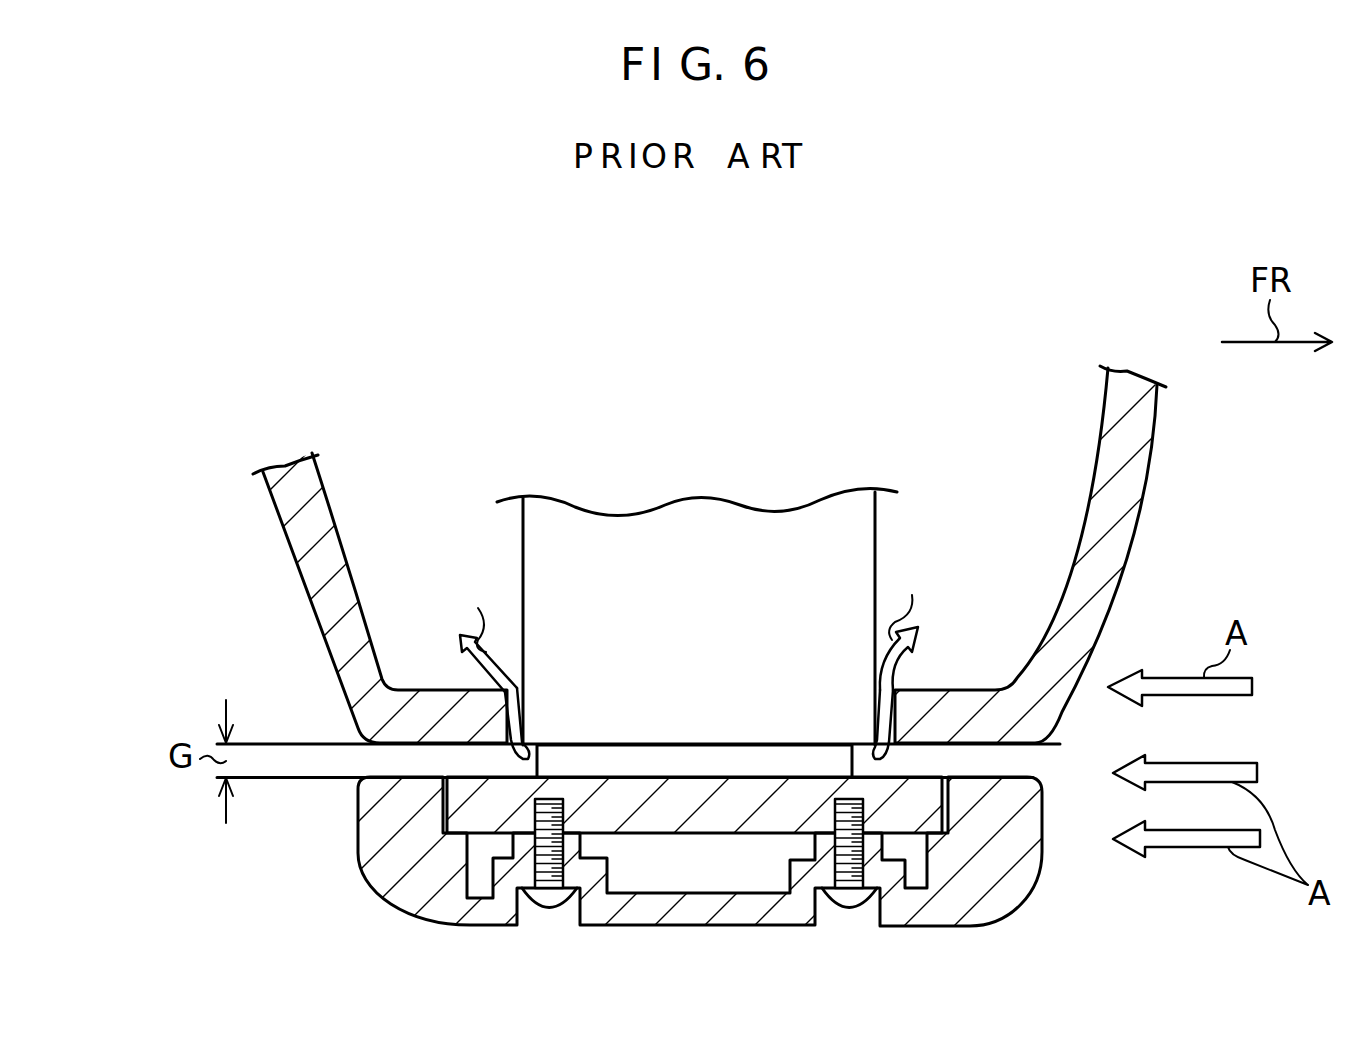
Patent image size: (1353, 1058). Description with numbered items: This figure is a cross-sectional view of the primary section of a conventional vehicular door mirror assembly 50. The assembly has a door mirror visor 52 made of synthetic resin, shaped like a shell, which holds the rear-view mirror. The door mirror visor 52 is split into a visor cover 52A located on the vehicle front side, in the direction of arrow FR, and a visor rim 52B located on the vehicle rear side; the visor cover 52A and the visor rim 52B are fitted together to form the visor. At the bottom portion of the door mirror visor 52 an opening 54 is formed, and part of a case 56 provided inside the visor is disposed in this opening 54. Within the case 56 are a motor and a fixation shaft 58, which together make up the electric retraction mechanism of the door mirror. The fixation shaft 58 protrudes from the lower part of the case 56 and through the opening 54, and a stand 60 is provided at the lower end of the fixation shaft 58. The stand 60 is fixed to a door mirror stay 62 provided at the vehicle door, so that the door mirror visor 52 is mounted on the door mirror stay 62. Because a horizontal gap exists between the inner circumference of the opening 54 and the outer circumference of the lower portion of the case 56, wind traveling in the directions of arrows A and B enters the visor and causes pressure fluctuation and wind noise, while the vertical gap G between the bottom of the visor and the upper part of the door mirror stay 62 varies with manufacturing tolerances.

The vehicular door mirror assembly 50 is at (312, 331).
The door mirror visor 52 is at (1171, 428).
The visor cover 52A is at (1117, 543).
The visor rim 52B is at (298, 542).
The opening 54 is at (478, 690).
The case 56 is at (723, 512).
The fixation shaft 58 is at (713, 760).
The stand 60 is at (700, 808).
The door mirror stay 62 is at (365, 822).